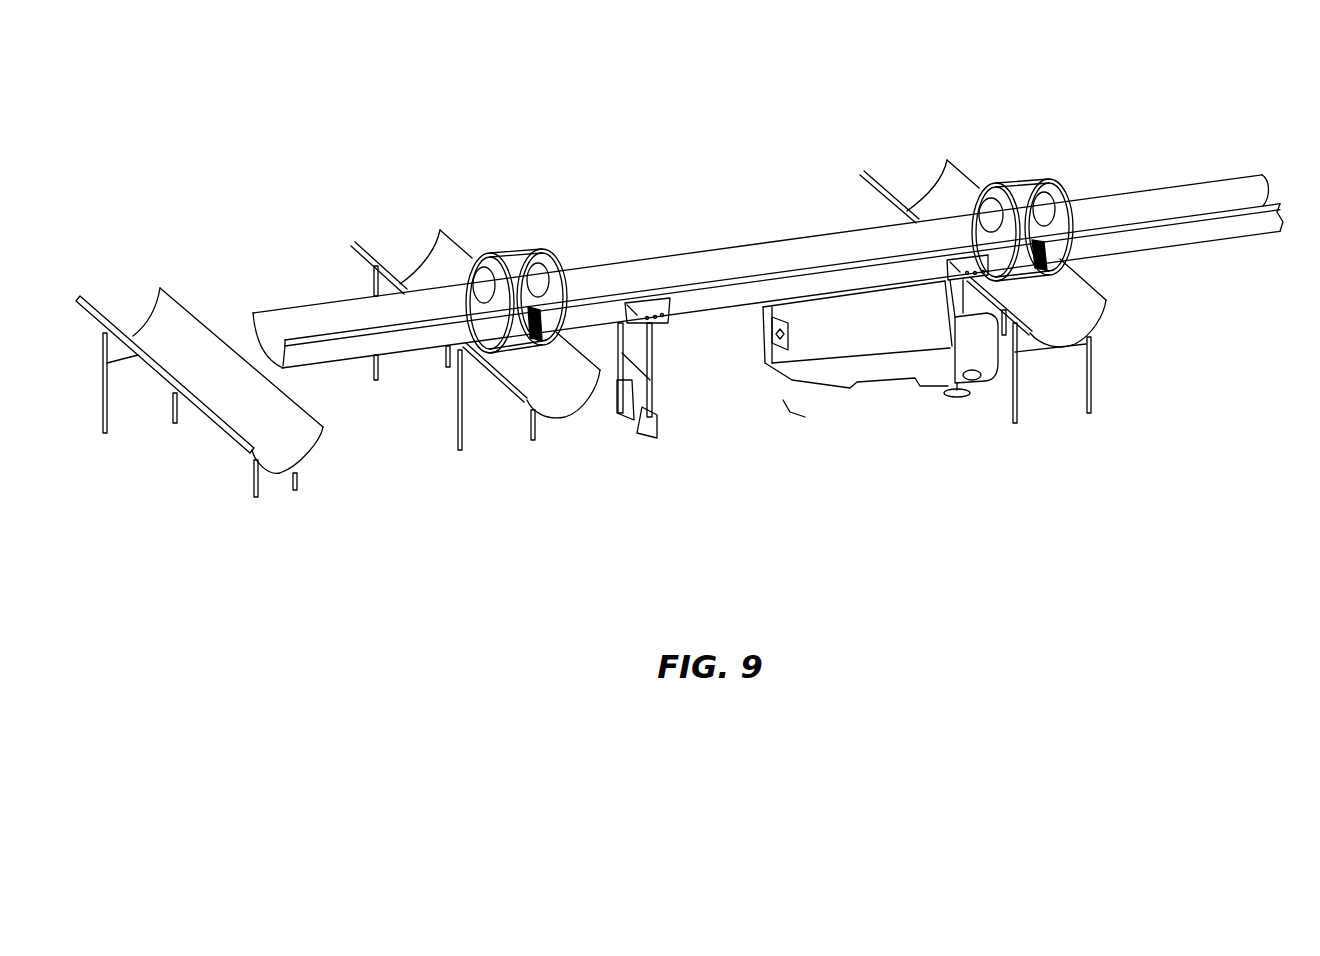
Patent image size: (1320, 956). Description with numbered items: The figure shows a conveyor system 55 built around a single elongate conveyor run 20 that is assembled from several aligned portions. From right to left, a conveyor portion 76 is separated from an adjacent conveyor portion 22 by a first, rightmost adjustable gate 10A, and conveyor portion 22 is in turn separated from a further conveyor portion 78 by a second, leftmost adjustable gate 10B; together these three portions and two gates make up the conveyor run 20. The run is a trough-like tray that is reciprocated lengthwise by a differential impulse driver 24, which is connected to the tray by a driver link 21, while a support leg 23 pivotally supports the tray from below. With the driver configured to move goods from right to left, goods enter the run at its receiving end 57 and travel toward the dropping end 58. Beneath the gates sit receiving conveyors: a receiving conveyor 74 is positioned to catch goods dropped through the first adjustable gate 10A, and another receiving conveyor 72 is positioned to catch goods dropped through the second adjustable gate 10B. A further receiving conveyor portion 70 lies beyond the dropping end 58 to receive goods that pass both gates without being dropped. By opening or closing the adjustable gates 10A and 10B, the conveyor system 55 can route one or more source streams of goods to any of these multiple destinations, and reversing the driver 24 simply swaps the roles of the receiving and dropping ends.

The conveyor system 55 is at (627, 130).
The receiving conveyor portion 70 is at (160, 288).
The dropping end 58 is at (267, 311).
The conveyor portion 78 is at (316, 301).
The receiving conveyor 72 is at (440, 230).
The second adjustable gate 10B is at (540, 250).
The conveyor portion 22 is at (700, 252).
The conveyor run 20 is at (800, 241).
The receiving conveyor 74 is at (947, 160).
The first adjustable gate 10A is at (1048, 180).
The conveyor portion 76 is at (1178, 184).
The receiving end 57 is at (1245, 175).
The support leg 23 is at (652, 372).
The differential impulse driver 24 is at (792, 364).
The driver link 21 is at (1106, 300).